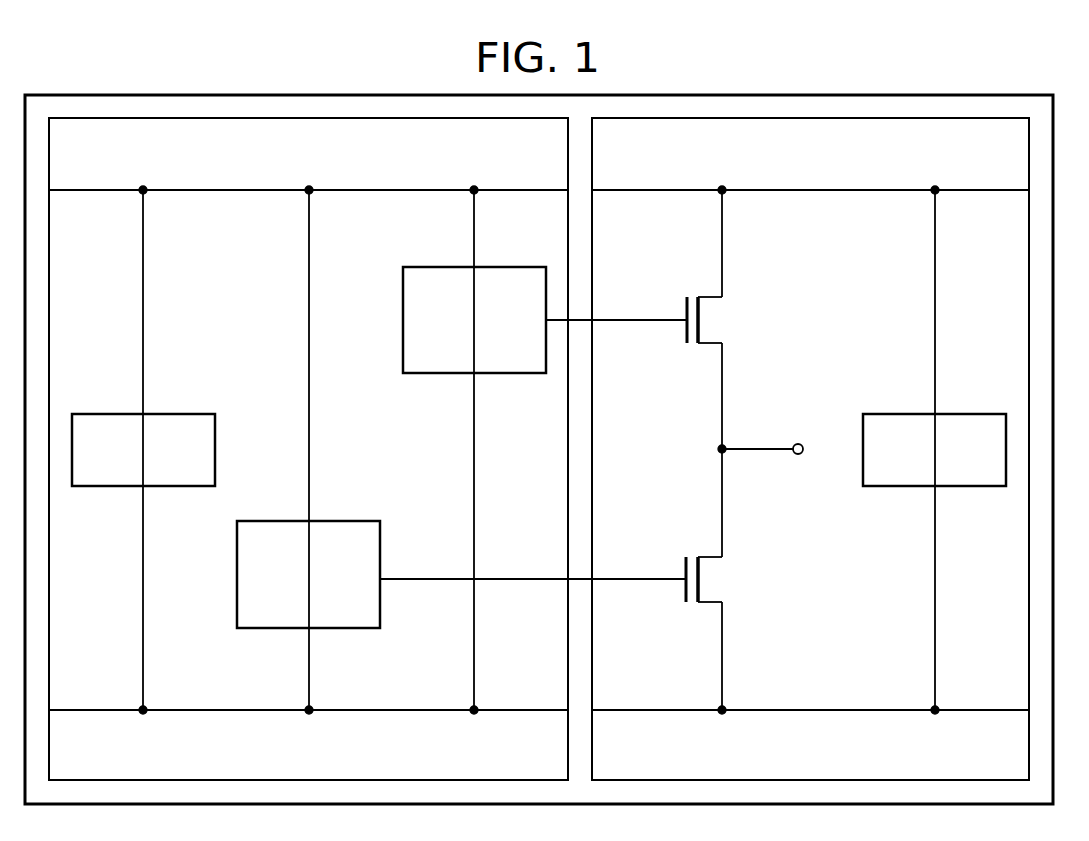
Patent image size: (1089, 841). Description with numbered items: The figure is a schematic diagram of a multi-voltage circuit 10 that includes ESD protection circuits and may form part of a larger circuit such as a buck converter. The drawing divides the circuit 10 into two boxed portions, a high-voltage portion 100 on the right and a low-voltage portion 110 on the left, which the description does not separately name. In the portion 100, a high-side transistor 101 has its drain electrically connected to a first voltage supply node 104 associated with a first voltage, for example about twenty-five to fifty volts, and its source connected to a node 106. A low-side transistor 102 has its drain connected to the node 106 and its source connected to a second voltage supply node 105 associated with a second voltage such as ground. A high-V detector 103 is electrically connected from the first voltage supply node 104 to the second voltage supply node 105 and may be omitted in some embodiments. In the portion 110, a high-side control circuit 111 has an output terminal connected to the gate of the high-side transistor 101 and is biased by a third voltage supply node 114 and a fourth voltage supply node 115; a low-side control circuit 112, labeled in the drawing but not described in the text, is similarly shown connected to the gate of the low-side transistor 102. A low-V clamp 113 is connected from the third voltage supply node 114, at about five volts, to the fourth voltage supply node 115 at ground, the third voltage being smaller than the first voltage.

The multi-voltage circuit 10 is at (290, 92).
The power stage 100 is at (789, 167).
The high-side transistor 101 is at (684, 308).
The low-side transistor 102 is at (683, 593).
The high voltage detector 103 is at (970, 413).
The first voltage supply node 104 is at (725, 195).
The second voltage supply node 105 is at (725, 715).
The node 106 is at (727, 445).
The control circuit block 110 is at (290, 167).
The high-side control circuit 111 is at (440, 266).
The low-side control circuit 112 is at (272, 630).
The low voltage clamp 113 is at (108, 413).
The third voltage supply node 114 is at (306, 196).
The fourth voltage supply node 115 is at (306, 713).